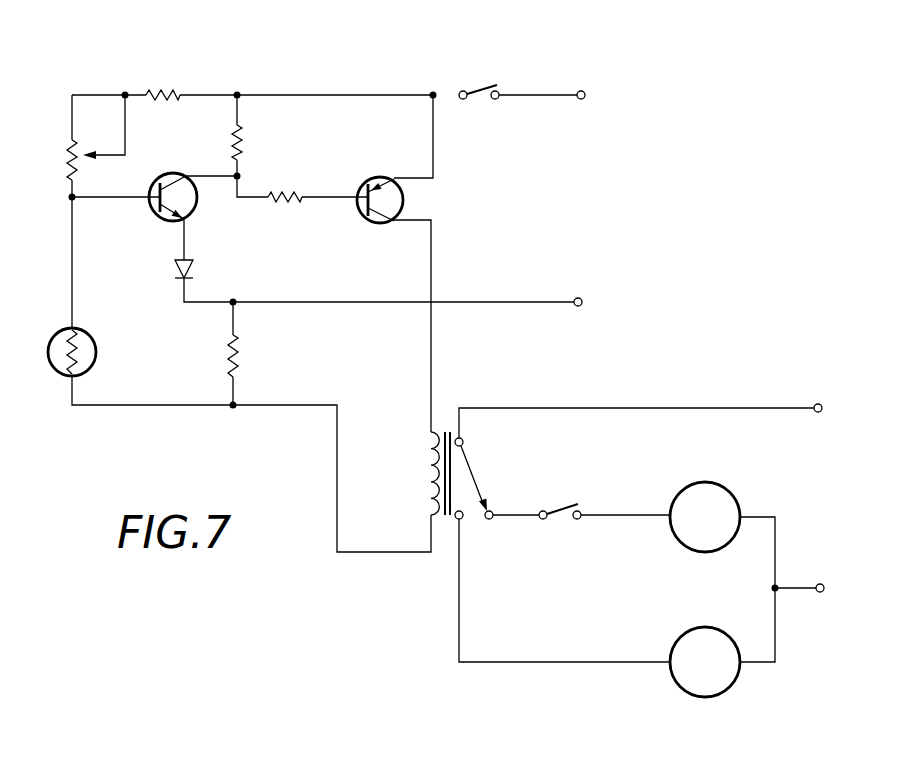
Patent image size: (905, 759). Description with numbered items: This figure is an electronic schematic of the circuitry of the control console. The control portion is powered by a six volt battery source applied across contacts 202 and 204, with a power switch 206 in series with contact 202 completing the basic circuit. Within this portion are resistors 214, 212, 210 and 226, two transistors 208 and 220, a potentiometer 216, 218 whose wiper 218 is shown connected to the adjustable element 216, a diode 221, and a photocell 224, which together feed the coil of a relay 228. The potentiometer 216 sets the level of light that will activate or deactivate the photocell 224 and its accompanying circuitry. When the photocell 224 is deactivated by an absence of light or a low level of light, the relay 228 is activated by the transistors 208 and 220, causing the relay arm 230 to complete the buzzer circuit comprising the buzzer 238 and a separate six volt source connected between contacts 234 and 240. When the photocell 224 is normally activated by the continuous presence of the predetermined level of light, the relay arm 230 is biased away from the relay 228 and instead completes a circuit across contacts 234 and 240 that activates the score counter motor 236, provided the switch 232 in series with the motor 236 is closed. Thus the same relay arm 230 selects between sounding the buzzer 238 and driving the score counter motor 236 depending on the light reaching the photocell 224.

The contact 202 is at (582, 90).
The contact 204 is at (580, 298).
The power switch 206 is at (477, 88).
The transistor 208 is at (366, 180).
The resistor 210 is at (285, 194).
The resistor 212 is at (242, 140).
The resistor 214 is at (176, 92).
The potentiometer 216 is at (68, 140).
The potentiometer 218 is at (125, 138).
The transistor 220 is at (152, 208).
The diode 221 is at (193, 270).
The photocell 224 is at (90, 335).
The resistor 226 is at (240, 350).
The relay 228 is at (427, 486).
The relay arm 230 is at (472, 462).
The switch 232 is at (562, 503).
The contact 234 is at (826, 394).
The score counter motor 236 is at (684, 490).
The buzzer 238 is at (673, 645).
The contact 240 is at (826, 572).